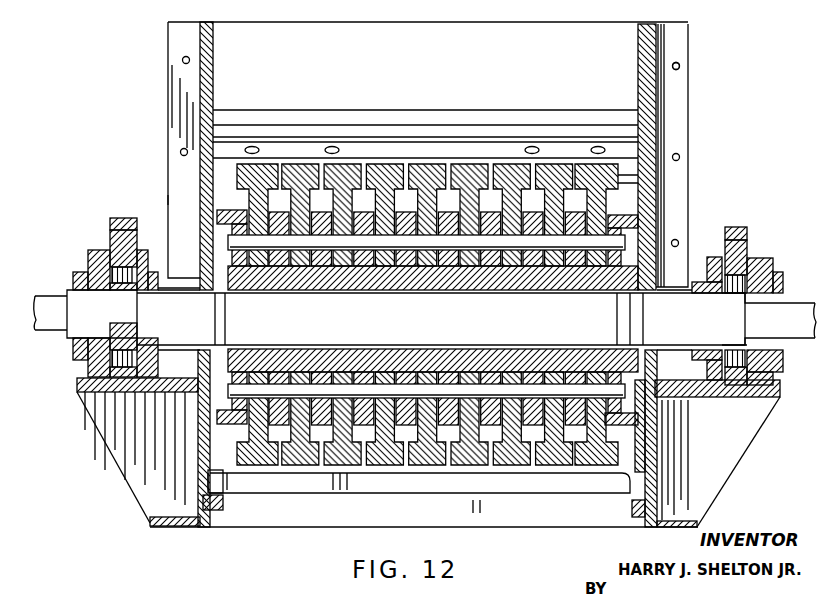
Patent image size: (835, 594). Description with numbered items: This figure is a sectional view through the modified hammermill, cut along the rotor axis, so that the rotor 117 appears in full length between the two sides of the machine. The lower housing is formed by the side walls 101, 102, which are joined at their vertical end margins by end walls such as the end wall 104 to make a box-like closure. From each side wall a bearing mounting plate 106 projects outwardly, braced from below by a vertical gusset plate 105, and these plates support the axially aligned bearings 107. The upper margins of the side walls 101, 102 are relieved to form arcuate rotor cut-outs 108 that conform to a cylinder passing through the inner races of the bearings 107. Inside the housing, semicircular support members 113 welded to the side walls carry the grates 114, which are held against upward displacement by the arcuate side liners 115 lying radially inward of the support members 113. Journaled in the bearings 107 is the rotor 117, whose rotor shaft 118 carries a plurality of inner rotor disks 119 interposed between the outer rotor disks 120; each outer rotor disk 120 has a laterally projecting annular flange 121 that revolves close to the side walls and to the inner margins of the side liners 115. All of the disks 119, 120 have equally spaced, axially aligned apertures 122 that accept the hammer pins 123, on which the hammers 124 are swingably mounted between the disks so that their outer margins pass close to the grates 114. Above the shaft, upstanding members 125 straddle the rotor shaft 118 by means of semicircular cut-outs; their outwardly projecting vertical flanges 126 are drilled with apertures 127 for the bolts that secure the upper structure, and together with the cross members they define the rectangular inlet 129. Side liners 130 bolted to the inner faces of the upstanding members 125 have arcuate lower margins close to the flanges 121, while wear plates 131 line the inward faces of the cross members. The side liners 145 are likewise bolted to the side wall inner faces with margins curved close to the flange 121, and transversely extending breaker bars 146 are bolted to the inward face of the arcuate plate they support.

The side wall 101 is at (198, 476).
The side wall 102 is at (662, 428).
The end wall 104 is at (330, 526).
The vertical gusset plate 105 is at (728, 482).
The bearing mounting plate 106 is at (78, 384).
The bearing 107 is at (772, 268).
The arcuate rotor cut-out 108 is at (650, 350).
The semicircular support member 113 is at (632, 508).
The grate 114 is at (514, 490).
The arcuate side liner 115 is at (648, 450).
The rotor 117 is at (730, 292).
The rotor shaft 118 is at (634, 315).
The inner rotor disk 119 is at (432, 290).
The outer rotor disk 120 is at (217, 258).
The annular flange 121 is at (217, 215).
The aperture 122 is at (620, 232).
The hammer pin 123 is at (217, 238).
The hammer 124 is at (378, 164).
The upstanding member 125 is at (200, 165).
The vertical flange 126 is at (680, 157).
The aperture 127 is at (680, 66).
The inlet 129 is at (522, 24).
The side liner 130 is at (638, 125).
The wear plate 131 is at (350, 72).
The side liner 145 is at (168, 199).
The breaker bar 146 is at (480, 132).